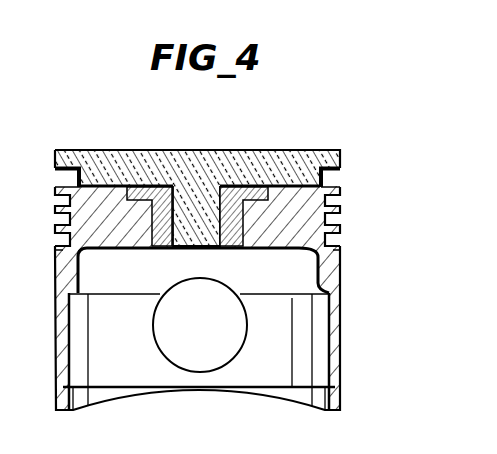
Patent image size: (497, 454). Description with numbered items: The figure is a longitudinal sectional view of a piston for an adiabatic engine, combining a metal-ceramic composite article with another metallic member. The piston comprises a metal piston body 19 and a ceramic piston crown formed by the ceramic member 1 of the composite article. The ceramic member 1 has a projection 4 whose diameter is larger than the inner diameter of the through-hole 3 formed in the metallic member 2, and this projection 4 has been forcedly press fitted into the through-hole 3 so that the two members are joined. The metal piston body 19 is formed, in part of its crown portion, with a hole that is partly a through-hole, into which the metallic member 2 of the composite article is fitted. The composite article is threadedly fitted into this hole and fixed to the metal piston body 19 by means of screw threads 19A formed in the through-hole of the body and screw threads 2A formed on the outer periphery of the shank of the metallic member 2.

The ceramic member 1 is at (198, 162).
The through-hole 3 is at (214, 203).
The projection 4 is at (175, 250).
The metallic member 2 is at (230, 249).
The screw threads 2A is at (300, 209).
The screw threads 19A is at (252, 249).
The metal piston body 19 is at (342, 352).